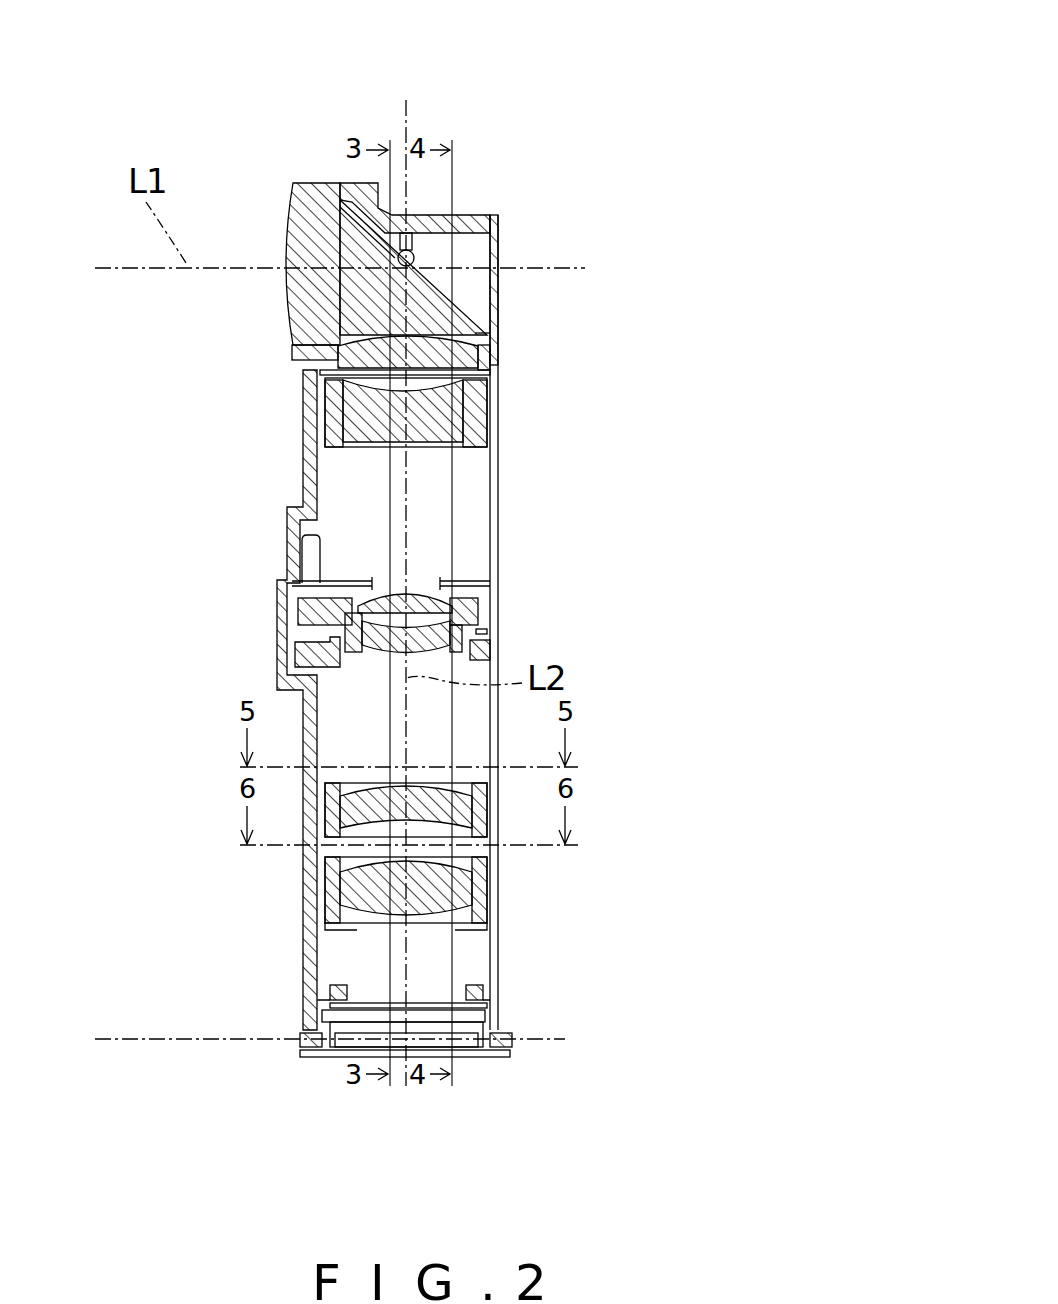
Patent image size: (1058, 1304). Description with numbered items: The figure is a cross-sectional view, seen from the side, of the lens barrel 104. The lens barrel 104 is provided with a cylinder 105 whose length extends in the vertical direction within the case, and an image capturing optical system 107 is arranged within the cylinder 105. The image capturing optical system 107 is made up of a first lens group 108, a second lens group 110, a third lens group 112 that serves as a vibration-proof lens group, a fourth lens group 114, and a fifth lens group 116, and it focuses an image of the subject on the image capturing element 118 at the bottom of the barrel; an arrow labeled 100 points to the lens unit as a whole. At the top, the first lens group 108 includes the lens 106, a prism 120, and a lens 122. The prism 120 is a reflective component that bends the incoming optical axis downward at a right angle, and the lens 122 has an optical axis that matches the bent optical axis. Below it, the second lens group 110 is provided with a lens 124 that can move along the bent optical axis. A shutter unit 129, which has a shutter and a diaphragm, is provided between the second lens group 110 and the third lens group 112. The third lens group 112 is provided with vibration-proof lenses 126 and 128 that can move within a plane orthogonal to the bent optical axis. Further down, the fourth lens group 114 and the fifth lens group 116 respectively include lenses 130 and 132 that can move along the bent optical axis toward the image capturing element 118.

The lens barrel 104 is at (142, 29).
The cylinder 105 is at (438, 215).
The lens 106 is at (320, 290).
The prism 120 is at (428, 307).
The lens 122 is at (440, 355).
The first lens group 108 is at (668, 212).
The lens 124 is at (430, 427).
The second lens group 110 is at (535, 428).
The lens unit 100 is at (431, 566).
The shutter unit 129 is at (325, 578).
The vibration-proof lens 126 is at (440, 600).
The vibration-proof lens 128 is at (445, 630).
The third lens group 112 is at (668, 577).
The lens 130 is at (462, 808).
The fourth lens group 114 is at (535, 795).
The lens 132 is at (460, 887).
The fifth lens group 116 is at (535, 889).
The image capturing optical system 107 is at (757, 272).
The image capturing element 118 is at (468, 1050).